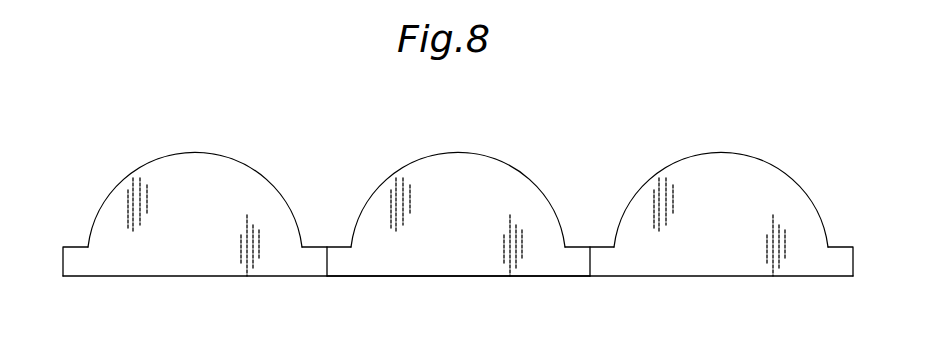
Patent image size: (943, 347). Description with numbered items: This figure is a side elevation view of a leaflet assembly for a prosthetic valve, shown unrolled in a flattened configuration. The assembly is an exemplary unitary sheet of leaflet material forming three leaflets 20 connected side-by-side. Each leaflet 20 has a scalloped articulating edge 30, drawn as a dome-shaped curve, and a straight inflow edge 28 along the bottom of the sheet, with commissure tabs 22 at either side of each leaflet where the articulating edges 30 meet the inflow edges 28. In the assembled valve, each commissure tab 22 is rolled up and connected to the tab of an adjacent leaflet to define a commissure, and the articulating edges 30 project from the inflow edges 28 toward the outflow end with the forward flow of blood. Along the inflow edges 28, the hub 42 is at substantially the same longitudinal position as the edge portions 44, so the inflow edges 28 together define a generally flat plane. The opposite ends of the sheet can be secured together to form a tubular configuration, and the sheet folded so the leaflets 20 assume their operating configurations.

The leaflet 20 is at (451, 189).
The articulating edge 30 is at (212, 152).
The commissure tab 22 is at (63, 260).
The inflow edge 28 is at (156, 277).
The hub 42 is at (458, 277).
The edge portion 44 is at (577, 277).